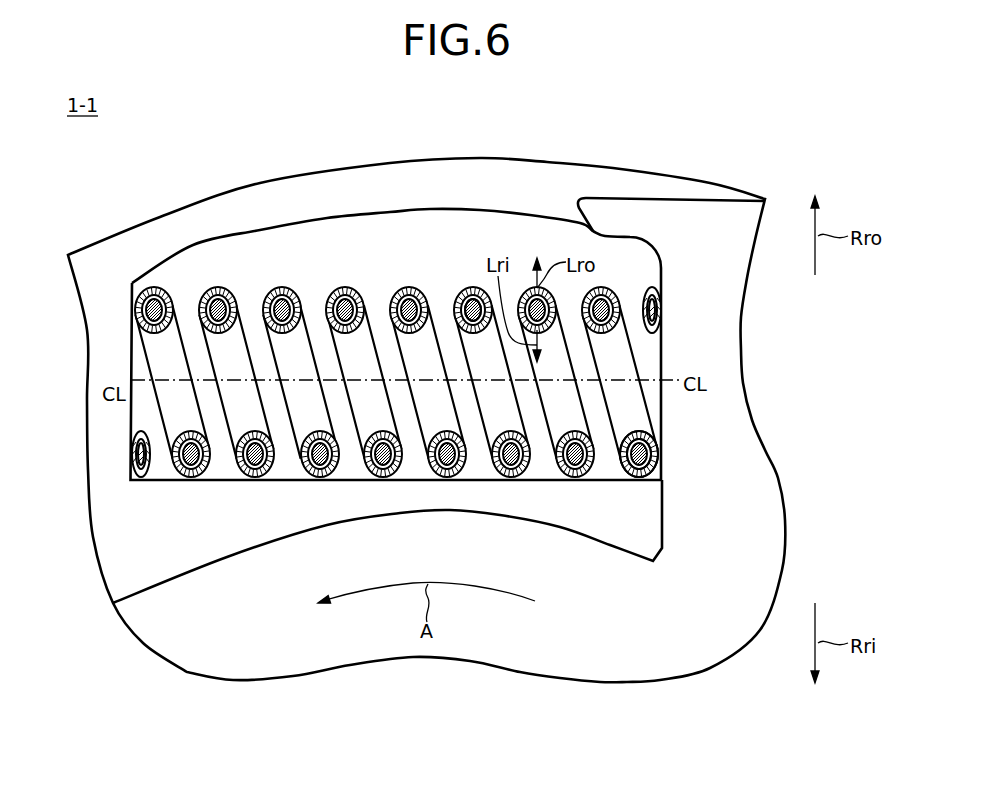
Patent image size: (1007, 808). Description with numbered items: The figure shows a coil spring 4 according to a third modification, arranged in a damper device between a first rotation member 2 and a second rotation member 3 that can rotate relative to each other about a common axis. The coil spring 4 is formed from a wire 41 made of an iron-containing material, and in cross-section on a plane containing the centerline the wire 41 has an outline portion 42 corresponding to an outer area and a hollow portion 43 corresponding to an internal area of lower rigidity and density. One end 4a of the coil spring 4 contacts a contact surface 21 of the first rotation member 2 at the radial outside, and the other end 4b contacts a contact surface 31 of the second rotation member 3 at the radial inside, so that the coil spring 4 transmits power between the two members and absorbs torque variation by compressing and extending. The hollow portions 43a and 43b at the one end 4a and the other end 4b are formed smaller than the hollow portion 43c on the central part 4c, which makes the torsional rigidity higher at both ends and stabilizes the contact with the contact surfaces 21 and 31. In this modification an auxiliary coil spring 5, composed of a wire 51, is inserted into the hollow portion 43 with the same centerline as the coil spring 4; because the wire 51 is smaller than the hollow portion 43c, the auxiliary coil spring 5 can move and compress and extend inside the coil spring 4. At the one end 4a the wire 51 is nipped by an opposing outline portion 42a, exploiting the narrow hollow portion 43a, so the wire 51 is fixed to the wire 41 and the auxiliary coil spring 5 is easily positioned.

The first rotation member 2 is at (194, 677).
The second rotation member 3 is at (197, 194).
The coil spring 4 is at (393, 384).
The one end 4a is at (663, 452).
The other end 4b is at (131, 305).
The central part 4c is at (382, 486).
The auxiliary coil spring 5 is at (230, 286).
The wire 51 is at (282, 290).
The contact surface 21 is at (658, 350).
The contact surface 31 is at (133, 358).
The wire 41 is at (345, 288).
The outline portion 42 is at (468, 300).
The opposing outline portion 42a is at (663, 460).
The hollow portion 43 is at (463, 319).
The hollow portion 43a is at (664, 306).
The hollow portion 43b is at (153, 288).
The hollow portion 43c is at (443, 482).